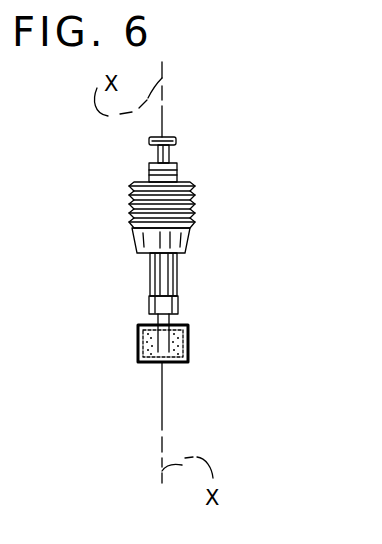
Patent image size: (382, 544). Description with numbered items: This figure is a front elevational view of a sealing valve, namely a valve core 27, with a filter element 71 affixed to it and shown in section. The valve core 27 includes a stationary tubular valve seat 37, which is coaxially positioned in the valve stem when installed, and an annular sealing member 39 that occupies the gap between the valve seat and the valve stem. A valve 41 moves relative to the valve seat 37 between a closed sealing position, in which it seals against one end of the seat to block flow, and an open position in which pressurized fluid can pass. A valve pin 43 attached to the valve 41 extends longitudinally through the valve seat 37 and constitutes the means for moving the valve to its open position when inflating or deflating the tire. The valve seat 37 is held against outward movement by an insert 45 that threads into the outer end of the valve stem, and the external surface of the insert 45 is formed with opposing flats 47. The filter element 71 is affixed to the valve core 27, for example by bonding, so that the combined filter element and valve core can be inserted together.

The valve core 27 is at (236, 113).
The valve pin 43 is at (172, 154).
The flats 47 is at (177, 170).
The insert 45 is at (131, 200).
The annular sealing member 39 is at (188, 238).
The valve seat 37 is at (150, 273).
The valve 41 is at (149, 312).
The filter element 71 is at (188, 337).